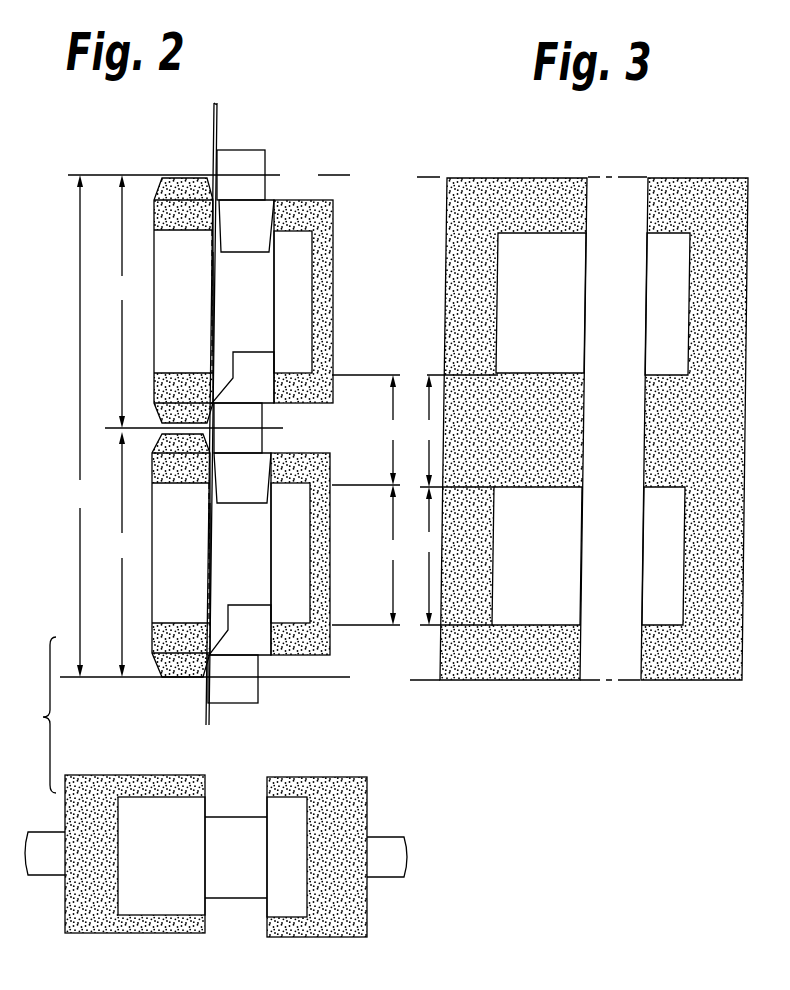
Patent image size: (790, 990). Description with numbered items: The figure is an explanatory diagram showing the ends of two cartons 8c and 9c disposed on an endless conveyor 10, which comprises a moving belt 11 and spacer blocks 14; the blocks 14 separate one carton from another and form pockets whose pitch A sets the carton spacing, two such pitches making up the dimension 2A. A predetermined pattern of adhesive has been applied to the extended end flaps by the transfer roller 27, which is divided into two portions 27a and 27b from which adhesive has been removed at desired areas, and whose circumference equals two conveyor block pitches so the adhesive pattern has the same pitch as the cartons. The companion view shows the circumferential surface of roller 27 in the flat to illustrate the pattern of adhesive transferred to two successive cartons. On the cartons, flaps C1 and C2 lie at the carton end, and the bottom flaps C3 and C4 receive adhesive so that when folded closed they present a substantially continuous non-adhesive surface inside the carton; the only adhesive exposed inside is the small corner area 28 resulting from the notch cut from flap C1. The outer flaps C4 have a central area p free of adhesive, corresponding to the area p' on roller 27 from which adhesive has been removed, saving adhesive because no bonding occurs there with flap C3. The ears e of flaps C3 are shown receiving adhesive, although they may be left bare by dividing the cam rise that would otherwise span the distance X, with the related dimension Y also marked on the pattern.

In FIG. 2, the endless conveyor 10 is at (195, 146).
In FIG. 2, the moving belt 11 is at (218, 120).
In FIG. 2, the spacer blocks 14 is at (246, 152).
In FIG. 2, the carton 8c is at (315, 186).
In FIG. 2, the carton 9c is at (326, 441).
In FIG. 2, the corner area 28 is at (218, 362).
In FIG. 2, the roller 27 is at (421, 801).
In FIG. 3, the roller 27 is at (620, 727).
In FIG. 2, the roller portion 27a is at (323, 777).
In FIG. 3, the roller portion 27a is at (707, 683).
In FIG. 2, the roller portion 27b is at (113, 775).
In FIG. 3, the roller portion 27b is at (518, 681).
In FIG. 2, the ears e is at (173, 186).
In FIG. 2, the carton pitch A is at (123, 426).
In FIG. 2, the roller circumference 2A is at (72, 426).
In FIG. 2, the flap C1 is at (256, 234).
In FIG. 2, the flap C2 is at (265, 388).
In FIG. 2, the bottom flap C3 is at (197, 335).
In FIG. 2, the outer flap C4 is at (333, 346).
In FIG. 2, the central area p is at (291, 427).
In FIG. 2, the adhesive-free area p' is at (287, 841).
In FIG. 3, the adhesive-free area p' is at (663, 437).
In FIG. 2, the distance X is at (366, 430).
In FIG. 3, the distance X is at (459, 431).
In FIG. 2, the dimension Y is at (366, 555).
In FIG. 3, the dimension Y is at (456, 556).